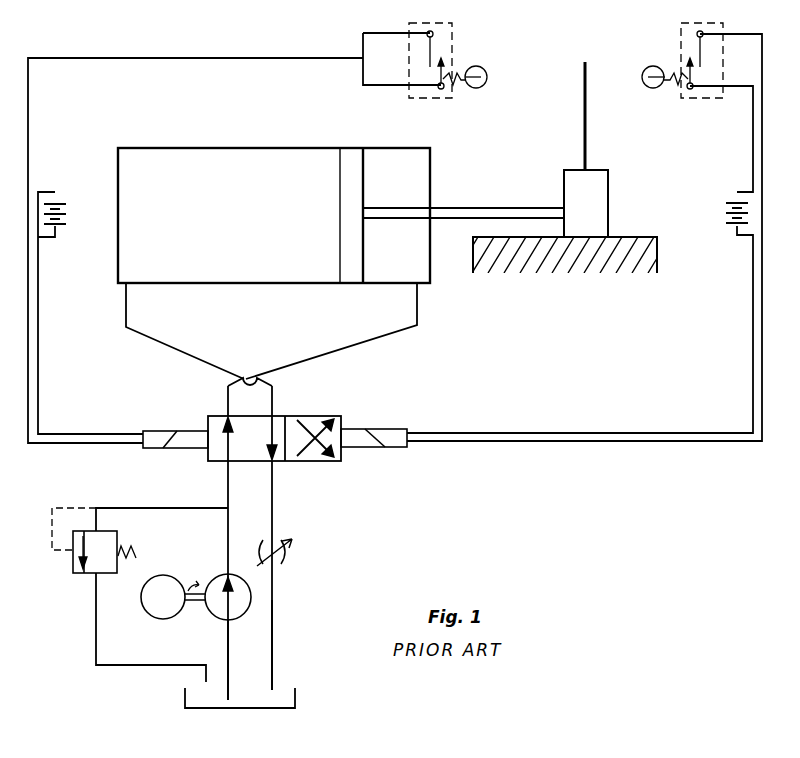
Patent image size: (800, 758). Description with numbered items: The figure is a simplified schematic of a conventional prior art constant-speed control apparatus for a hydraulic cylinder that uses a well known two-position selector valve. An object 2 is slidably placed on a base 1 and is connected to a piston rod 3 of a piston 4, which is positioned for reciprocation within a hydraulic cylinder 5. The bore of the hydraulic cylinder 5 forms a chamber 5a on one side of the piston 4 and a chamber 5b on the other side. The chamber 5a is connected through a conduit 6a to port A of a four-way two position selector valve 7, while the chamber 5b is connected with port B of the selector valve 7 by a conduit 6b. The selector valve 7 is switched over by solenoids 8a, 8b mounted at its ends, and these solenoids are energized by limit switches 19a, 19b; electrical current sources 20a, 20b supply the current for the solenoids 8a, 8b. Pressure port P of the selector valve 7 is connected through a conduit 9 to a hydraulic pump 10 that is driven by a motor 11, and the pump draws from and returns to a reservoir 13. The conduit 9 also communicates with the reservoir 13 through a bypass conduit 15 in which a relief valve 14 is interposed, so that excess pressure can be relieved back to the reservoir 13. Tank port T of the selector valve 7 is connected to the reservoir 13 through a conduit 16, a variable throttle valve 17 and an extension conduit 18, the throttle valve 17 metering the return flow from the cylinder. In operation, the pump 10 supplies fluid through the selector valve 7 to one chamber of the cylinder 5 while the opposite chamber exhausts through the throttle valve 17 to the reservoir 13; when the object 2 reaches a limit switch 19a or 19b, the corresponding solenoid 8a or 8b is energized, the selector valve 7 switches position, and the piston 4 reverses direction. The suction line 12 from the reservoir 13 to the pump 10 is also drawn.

The base 1 is at (578, 258).
The object 2 is at (593, 183).
The piston rod 3 is at (470, 208).
The piston 4 is at (354, 165).
The hydraulic cylinder 5 is at (263, 147).
The chamber 5a is at (173, 168).
The chamber 5b is at (412, 168).
The conduit 6a is at (190, 354).
The conduit 6b is at (330, 352).
The four-way two position selector valve 7 is at (315, 416).
The solenoid 8a is at (185, 440).
The solenoid 8b is at (390, 436).
The conduit 9 is at (228, 481).
The hydraulic pump 10 is at (213, 578).
The motor 11 is at (165, 578).
The suction line 12 is at (228, 634).
The reservoir 13 is at (247, 700).
The relief valve 14 is at (77, 557).
The bypass conduit 15 is at (96, 625).
The conduit 16 is at (272, 496).
The variable throttle valve 17 is at (285, 556).
The extension conduit 18 is at (272, 620).
The limit switch 19a is at (452, 38).
The limit switch 19b is at (684, 34).
The electrical current source 20a is at (63, 206).
The electrical current source 20b is at (736, 202).